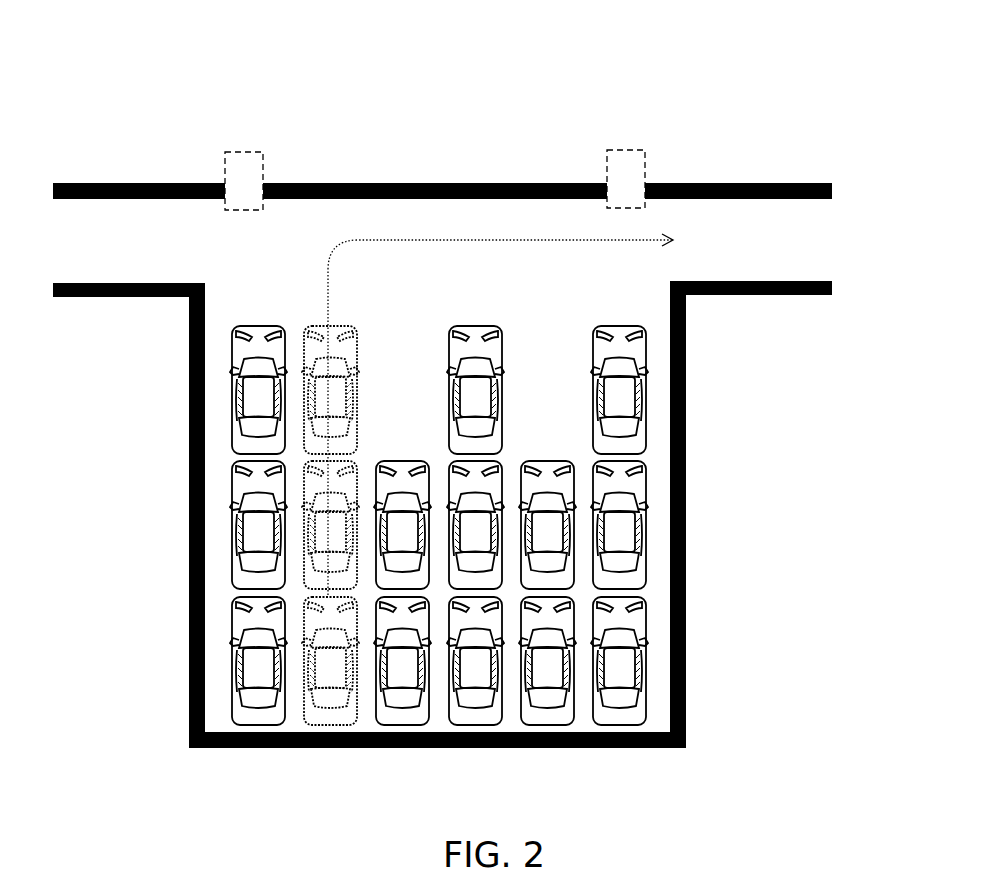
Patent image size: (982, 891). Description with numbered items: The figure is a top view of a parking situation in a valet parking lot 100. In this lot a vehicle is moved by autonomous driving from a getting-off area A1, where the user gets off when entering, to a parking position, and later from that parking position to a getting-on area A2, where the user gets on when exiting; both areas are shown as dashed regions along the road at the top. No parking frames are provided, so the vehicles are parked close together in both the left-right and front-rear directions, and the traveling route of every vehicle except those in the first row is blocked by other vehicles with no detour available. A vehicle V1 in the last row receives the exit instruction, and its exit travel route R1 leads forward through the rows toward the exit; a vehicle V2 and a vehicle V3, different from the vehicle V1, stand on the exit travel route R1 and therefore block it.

The valet parking lot 100 is at (440, 80).
The getting-off area A1 is at (247, 151).
The getting-on area A2 is at (629, 149).
The exit travel route R1 is at (512, 242).
The vehicle V1 is at (352, 713).
The vehicle V2 is at (356, 462).
The vehicle V3 is at (357, 340).